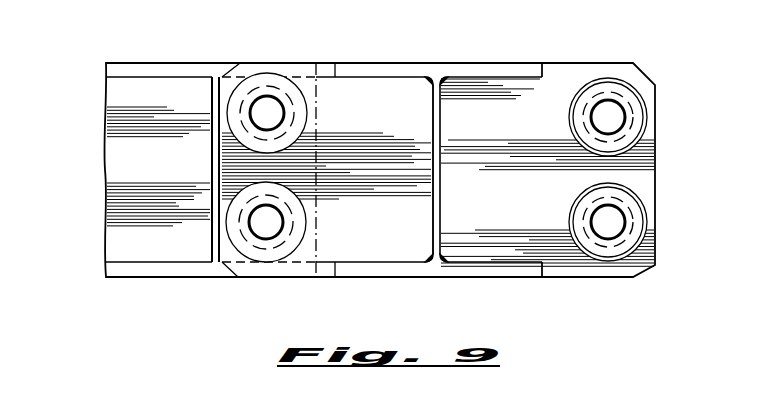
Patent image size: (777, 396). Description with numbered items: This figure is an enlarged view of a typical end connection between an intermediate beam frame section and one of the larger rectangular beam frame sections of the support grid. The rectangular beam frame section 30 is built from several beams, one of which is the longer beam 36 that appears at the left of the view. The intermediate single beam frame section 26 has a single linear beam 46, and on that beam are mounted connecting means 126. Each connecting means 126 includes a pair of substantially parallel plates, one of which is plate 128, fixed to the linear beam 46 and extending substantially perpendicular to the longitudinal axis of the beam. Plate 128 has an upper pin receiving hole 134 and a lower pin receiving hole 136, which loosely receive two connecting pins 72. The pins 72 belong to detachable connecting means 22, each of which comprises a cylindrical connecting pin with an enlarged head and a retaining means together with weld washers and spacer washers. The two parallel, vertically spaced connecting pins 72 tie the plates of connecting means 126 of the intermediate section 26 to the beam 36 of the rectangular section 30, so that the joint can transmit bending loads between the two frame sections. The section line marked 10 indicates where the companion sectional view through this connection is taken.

The rectangular beam frame section 30 is at (130, 58).
The section line 10- 10 is at (313, 52).
The cylindrical connecting pin 72 is at (268, 110).
The intermediate single beam frame section 26 is at (449, 62).
The upper pin receiving hole 134 is at (240, 114).
The detachable connecting means 22 is at (307, 113).
The linear beam 46 is at (441, 190).
The beam 36 is at (125, 240).
The lower pin receiving hole 136 is at (259, 241).
The connecting means 126 is at (368, 247).
The plate 128 is at (497, 185).